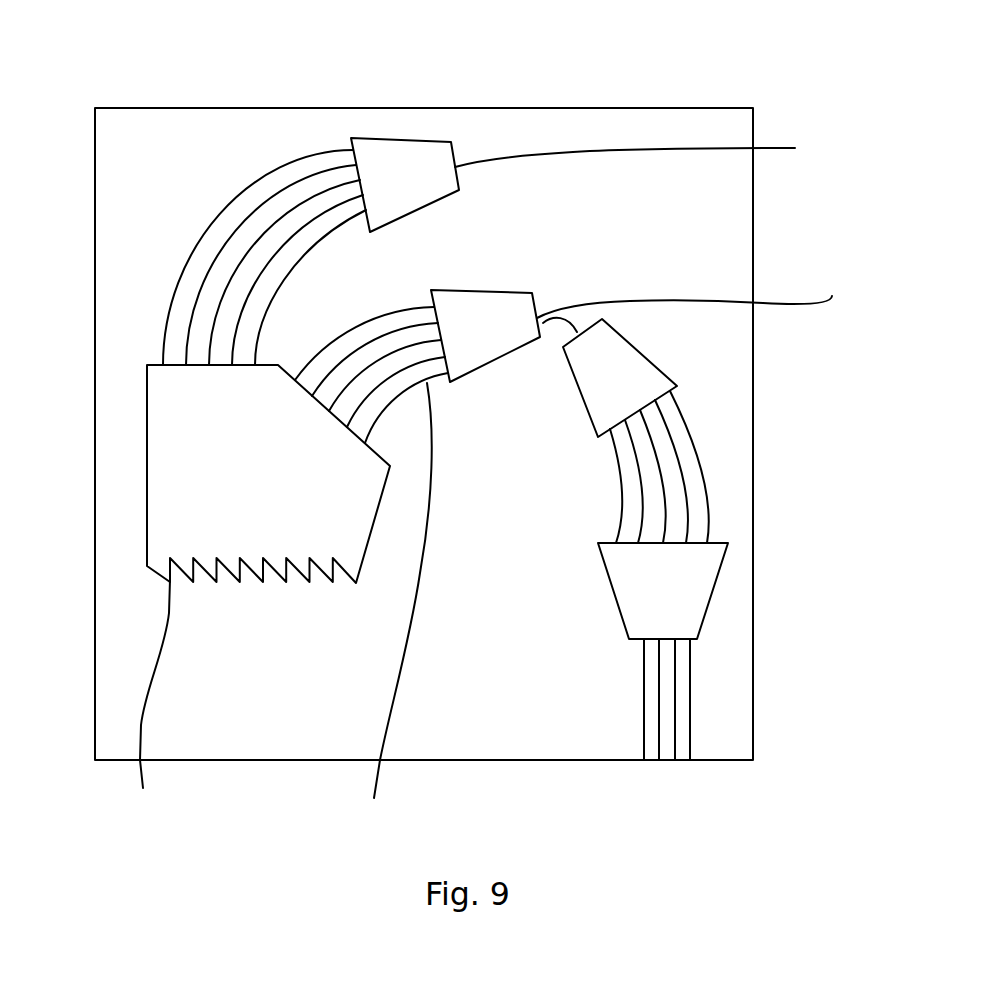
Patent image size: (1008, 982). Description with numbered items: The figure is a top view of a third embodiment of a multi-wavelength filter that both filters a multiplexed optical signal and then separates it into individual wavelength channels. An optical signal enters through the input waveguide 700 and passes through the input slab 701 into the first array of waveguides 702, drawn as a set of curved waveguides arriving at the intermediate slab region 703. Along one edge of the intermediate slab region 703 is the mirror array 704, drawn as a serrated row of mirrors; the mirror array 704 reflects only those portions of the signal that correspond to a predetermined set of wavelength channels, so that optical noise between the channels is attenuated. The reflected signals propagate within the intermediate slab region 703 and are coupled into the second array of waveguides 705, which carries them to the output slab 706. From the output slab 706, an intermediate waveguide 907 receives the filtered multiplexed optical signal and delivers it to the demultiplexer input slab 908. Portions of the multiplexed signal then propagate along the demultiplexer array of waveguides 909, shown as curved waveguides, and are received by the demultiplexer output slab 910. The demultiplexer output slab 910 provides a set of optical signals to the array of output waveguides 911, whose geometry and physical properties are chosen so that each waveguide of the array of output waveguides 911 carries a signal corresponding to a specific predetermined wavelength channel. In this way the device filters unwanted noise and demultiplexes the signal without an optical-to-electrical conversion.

The input waveguide 700 is at (587, 147).
The input slab 701 is at (390, 137).
The first array of waveguides 702 is at (267, 182).
The intermediate slab region 703 is at (147, 399).
The mirror array 704 is at (157, 705).
The second array of waveguides 705 is at (392, 609).
The output slab 706 is at (537, 295).
The intermediate waveguide 907 is at (711, 298).
The demultiplexer input slab 908 is at (648, 355).
The demultiplexer array of waveguides 909 is at (703, 478).
The demultiplexer output slab 910 is at (715, 588).
The array of output waveguides 911 is at (691, 695).